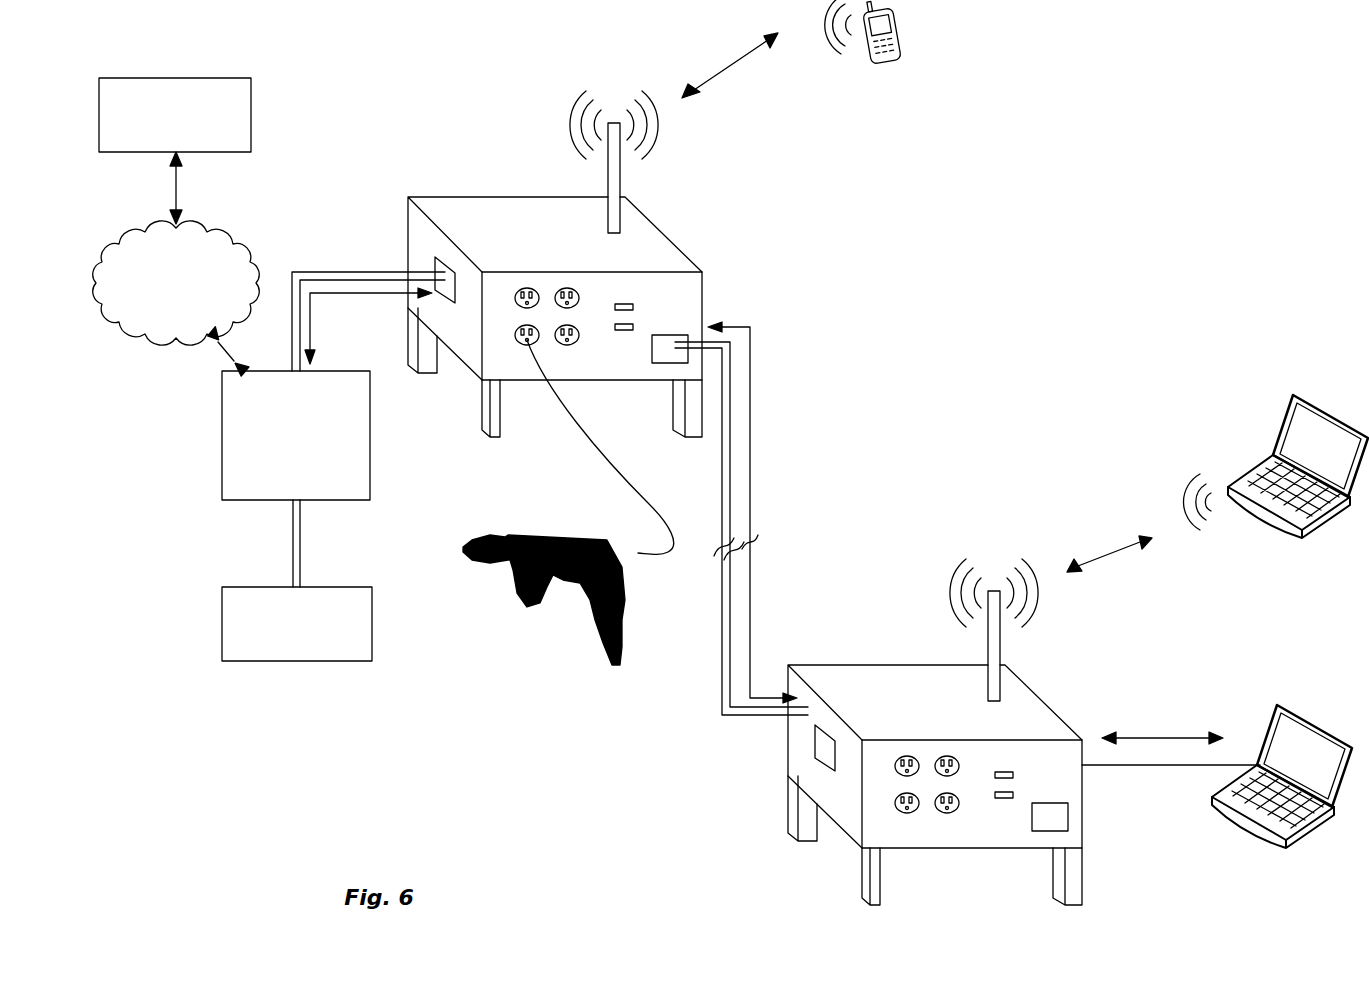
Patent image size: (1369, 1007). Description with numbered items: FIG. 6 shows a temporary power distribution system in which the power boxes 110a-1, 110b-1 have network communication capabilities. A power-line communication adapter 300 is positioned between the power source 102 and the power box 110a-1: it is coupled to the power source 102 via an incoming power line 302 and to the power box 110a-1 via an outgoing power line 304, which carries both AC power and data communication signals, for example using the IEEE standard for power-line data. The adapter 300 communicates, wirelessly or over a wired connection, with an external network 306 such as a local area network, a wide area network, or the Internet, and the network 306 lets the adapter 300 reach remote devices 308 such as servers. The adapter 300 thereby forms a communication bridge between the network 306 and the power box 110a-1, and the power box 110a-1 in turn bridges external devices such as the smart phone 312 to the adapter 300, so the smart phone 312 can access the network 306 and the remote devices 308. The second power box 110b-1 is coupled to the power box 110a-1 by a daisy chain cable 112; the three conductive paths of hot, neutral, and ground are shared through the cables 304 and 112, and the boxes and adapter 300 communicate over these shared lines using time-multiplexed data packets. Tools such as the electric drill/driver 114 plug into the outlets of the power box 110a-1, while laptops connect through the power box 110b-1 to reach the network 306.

The power source 102 is at (263, 663).
The daisy chain cable 112 is at (732, 470).
The electric drill/driver 114 is at (578, 650).
The power box 110a-1 is at (475, 198).
The power box 110b-1 is at (903, 663).
The power-line communication adapter 300 is at (222, 407).
The incoming power line 302 is at (300, 522).
The outgoing power line 304 is at (362, 270).
The external network 306 is at (223, 240).
The remote devices 308 is at (253, 115).
The smart phone 312 is at (897, 50).